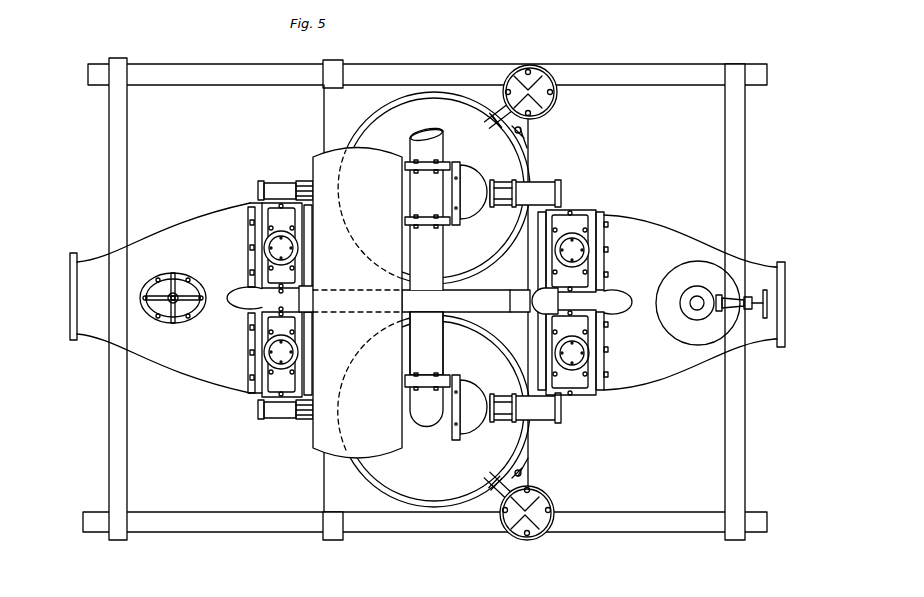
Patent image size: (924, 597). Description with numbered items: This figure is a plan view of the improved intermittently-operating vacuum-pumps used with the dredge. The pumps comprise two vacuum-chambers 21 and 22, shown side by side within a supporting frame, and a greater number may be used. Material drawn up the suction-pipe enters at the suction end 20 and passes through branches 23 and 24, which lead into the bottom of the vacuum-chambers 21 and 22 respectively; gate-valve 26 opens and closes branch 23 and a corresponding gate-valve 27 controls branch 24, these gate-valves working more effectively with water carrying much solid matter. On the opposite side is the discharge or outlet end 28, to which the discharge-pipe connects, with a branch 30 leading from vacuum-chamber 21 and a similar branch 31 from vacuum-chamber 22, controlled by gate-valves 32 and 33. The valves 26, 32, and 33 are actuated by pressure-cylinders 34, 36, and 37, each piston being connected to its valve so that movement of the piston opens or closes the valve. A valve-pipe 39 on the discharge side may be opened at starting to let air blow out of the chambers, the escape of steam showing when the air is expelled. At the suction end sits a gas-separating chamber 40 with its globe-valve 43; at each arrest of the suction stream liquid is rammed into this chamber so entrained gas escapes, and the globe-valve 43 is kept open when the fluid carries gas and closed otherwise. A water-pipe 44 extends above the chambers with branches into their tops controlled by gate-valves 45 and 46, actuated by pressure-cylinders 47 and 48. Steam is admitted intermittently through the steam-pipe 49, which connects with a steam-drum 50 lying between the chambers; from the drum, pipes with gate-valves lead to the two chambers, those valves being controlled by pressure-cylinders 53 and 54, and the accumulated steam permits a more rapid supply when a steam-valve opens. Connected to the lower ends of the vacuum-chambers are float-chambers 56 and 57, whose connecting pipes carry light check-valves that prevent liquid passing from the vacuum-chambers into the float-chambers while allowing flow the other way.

The suction end 20 is at (792, 304).
The vacuum-chamber 21 is at (434, 411).
The vacuum-chamber 22 is at (434, 188).
The branch 23 is at (689, 364).
The branch 24 is at (689, 241).
The valve 26 is at (573, 363).
The valve 27 is at (580, 216).
The discharge or outlet end 28 is at (152, 298).
The branch 30 is at (263, 354).
The branch 31 is at (262, 245).
The valve 32 is at (277, 384).
The valve 33 is at (274, 216).
The pressure-cylinder 34 is at (590, 252).
The pressure-cylinder 36 is at (298, 250).
The pressure-cylinder 37 is at (298, 351).
The valve-pipe 39 is at (171, 307).
The gas-separating chamber 40 is at (698, 303).
The globe-valve 43 is at (700, 297).
The water-pipe 44 is at (432, 146).
The valve 45 is at (470, 392).
The valve 46 is at (475, 208).
The pressure-cylinder 47 is at (525, 415).
The pressure-cylinder 48 is at (525, 186).
The steam-pipe 49 is at (282, 295).
The steam-drum 50 is at (357, 303).
The pressure-cylinder 53 is at (285, 417).
The pressure-cylinder 54 is at (285, 183).
The float-chamber 56 is at (526, 499).
The float-chamber 57 is at (530, 106).